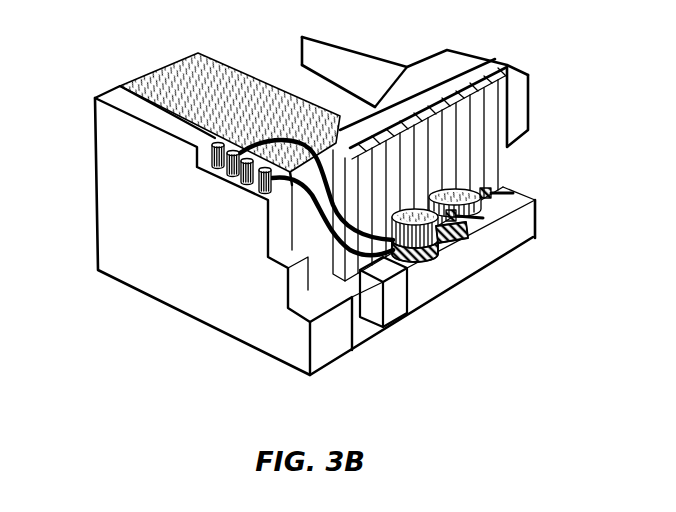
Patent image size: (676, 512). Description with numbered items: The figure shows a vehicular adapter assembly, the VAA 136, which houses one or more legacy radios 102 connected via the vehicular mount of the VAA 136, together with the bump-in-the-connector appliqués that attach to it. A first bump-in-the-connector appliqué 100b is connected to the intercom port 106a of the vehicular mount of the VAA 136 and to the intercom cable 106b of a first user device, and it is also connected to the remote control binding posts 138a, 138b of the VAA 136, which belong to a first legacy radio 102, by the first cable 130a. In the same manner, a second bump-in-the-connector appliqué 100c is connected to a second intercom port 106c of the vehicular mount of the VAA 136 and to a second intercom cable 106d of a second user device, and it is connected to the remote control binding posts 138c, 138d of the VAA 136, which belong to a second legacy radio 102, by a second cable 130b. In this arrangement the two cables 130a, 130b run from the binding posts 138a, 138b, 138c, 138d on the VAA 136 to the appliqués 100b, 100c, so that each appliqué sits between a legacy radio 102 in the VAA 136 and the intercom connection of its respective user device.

The legacy radio 102 is at (181, 86).
The second cable 130b is at (266, 142).
The first cable 130a is at (308, 206).
The VAA 136 is at (97, 220).
The remote control binding post 138a is at (262, 193).
The remote control binding post 138b is at (245, 185).
The remote control binding post 138c is at (232, 176).
The remote control binding post 138d is at (210, 170).
The intercom port 106a is at (410, 263).
The intercom cable 106b is at (430, 174).
The second intercom port 106c is at (447, 252).
The second intercom cable 106d is at (415, 98).
The first bump-in-the-connector appliqué 100b is at (455, 262).
The second bump-in-the-connector appliqué 100c is at (537, 216).